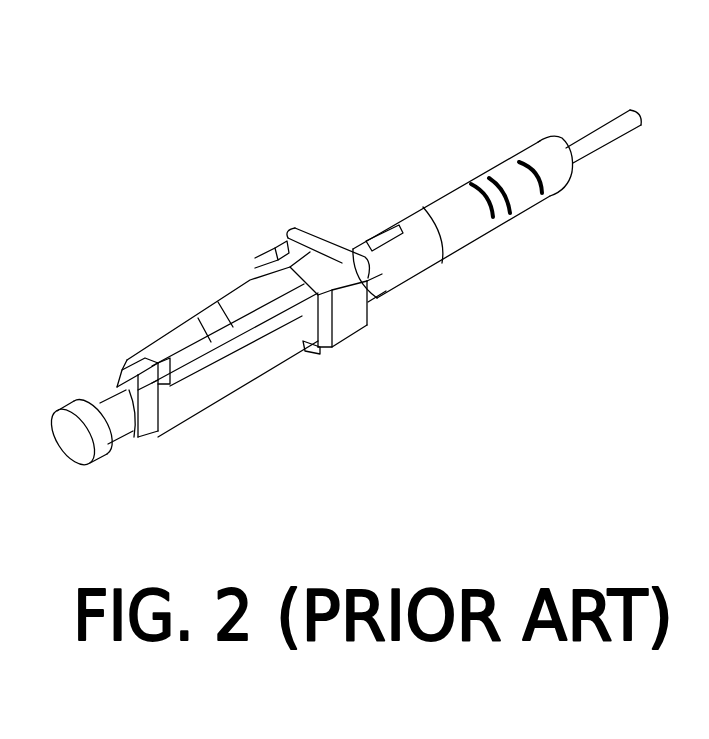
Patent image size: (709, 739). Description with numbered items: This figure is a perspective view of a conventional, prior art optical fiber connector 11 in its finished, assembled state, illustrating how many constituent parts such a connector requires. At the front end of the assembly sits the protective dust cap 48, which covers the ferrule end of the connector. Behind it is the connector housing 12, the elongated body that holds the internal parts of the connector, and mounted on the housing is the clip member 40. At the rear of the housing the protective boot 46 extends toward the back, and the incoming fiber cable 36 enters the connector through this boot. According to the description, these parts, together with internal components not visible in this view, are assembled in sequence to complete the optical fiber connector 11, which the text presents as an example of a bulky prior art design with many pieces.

The optical fiber connector 11 is at (248, 137).
The connector housing 12 is at (192, 392).
The incoming fiber cable 36 is at (600, 148).
The clip member 40 is at (350, 317).
The protective boot 46 is at (472, 225).
The protective dust cap 48 is at (101, 403).